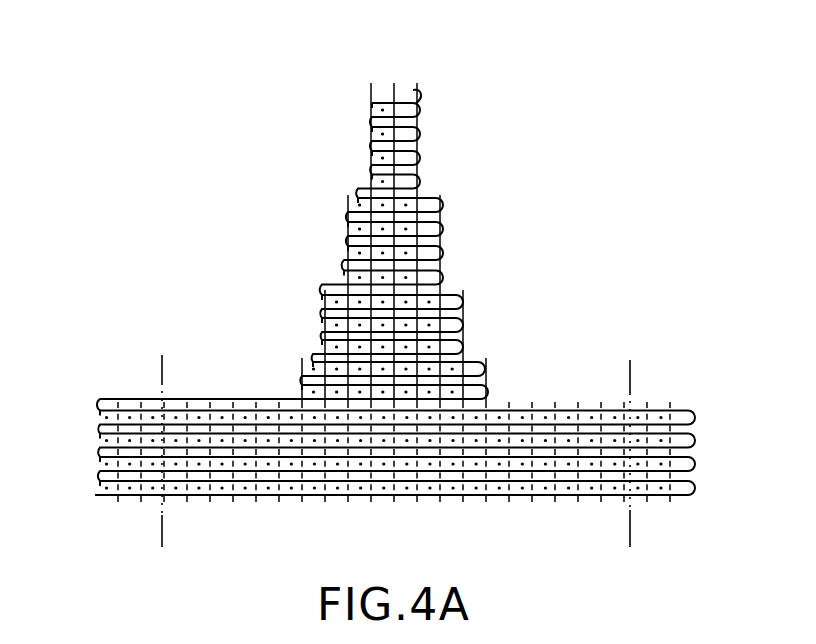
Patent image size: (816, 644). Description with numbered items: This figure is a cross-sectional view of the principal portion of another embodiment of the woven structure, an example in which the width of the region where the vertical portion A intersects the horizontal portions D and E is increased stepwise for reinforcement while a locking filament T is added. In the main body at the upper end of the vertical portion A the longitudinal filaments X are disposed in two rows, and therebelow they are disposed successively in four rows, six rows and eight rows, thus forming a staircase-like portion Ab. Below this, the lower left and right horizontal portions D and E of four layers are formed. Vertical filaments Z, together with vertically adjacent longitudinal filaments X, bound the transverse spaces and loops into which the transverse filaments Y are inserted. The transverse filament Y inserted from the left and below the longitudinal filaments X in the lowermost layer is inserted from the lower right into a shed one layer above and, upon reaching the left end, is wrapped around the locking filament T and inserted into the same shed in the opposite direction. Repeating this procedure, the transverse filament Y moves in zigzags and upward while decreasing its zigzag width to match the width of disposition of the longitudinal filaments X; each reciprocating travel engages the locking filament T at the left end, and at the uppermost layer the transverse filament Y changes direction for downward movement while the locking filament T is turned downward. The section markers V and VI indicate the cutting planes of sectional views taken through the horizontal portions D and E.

The horizontal portion D is at (395, 305).
The vertical portion A is at (365, 282).
The staircase-like portion Ab is at (300, 341).
The locking filament T is at (104, 411).
The horizontal portion E is at (707, 489).
The longitudinal filaments X is at (388, 83).
The transverse filament Y is at (421, 113).
The vertical filaments Z is at (398, 80).
The section line V- V is at (156, 532).
The section line VI- VI is at (680, 533).